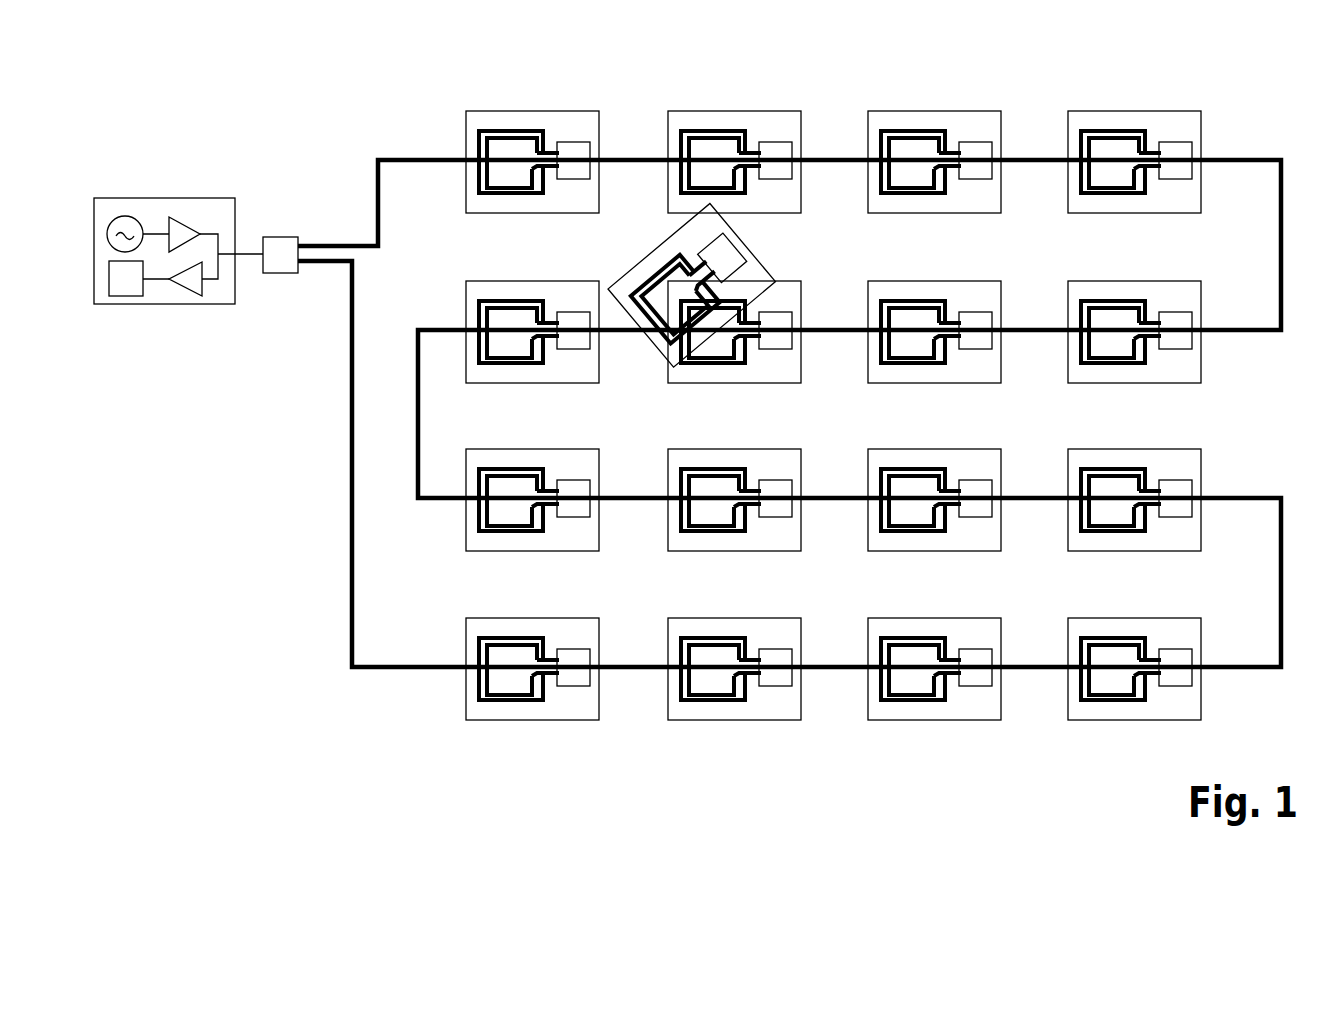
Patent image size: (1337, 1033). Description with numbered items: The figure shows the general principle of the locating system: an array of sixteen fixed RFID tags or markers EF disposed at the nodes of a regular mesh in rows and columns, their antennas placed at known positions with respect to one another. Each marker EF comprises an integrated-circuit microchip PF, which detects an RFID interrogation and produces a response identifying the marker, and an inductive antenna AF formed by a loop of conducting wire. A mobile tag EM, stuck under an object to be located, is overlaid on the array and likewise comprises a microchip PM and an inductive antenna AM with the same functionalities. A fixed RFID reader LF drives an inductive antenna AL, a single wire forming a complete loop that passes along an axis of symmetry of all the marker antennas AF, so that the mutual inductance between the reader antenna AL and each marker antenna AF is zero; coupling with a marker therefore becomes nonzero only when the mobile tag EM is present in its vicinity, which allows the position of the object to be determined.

The antenna AF is at (503, 129).
The fixed tag EF is at (943, 110).
The integrated-circuit microchip PF is at (580, 179).
The antenna AM is at (648, 283).
The mobile tag EM is at (738, 233).
The integrated circuit microchip PM is at (765, 249).
The inductive antenna AL is at (376, 193).
The fixed RFID reader LF is at (205, 304).